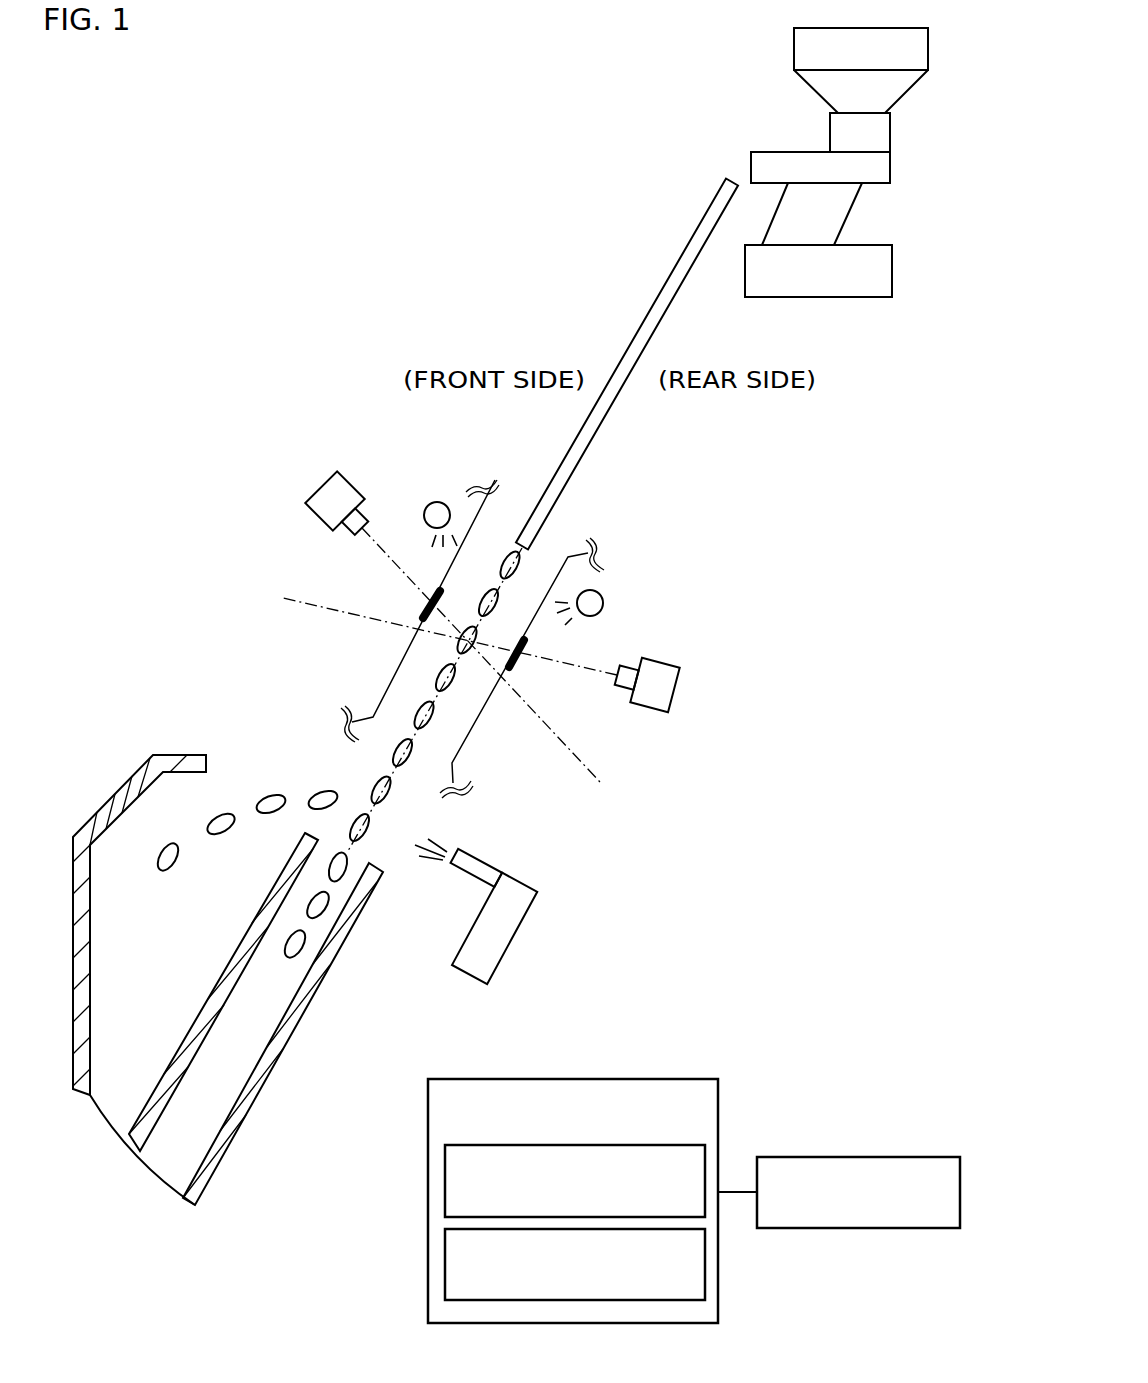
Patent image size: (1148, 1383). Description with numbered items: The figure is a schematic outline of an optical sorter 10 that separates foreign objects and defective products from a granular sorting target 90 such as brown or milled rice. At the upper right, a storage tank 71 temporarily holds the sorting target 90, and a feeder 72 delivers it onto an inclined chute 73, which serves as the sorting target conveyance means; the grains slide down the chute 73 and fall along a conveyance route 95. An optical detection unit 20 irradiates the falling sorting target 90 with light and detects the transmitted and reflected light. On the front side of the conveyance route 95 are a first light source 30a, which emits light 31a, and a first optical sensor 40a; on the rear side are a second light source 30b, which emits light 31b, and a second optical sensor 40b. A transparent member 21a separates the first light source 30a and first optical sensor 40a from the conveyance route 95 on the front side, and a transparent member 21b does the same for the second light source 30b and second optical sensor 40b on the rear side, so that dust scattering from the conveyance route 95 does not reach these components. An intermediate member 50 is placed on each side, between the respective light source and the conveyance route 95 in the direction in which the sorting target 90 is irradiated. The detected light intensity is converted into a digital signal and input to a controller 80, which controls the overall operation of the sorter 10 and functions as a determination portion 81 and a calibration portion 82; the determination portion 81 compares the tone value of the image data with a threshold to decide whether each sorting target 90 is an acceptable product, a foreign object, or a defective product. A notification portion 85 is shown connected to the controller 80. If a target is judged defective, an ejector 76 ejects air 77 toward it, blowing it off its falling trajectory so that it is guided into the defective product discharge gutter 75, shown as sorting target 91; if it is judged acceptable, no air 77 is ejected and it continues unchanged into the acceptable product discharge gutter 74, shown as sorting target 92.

The optical sorter 10 is at (196, 134).
The optical detection unit 20 is at (198, 449).
The transparent member 21a is at (412, 655).
The transparent member 21b is at (484, 683).
The first light source 30a is at (437, 502).
The second light source 30b is at (600, 592).
The light 31a is at (427, 547).
The light 31b is at (567, 623).
The first optical sensor 40a is at (322, 485).
The second optical sensor 40b is at (680, 688).
The intermediate member 50 is at (422, 612).
The storage tank 71 is at (812, 50).
The feeder 72 is at (778, 160).
The chute 73 is at (650, 325).
The acceptable product discharge gutter 74 is at (254, 1045).
The defective product discharge gutter 75 is at (164, 988).
The ejector 76 is at (527, 915).
The air 77 is at (428, 862).
The controller 80 is at (653, 1079).
The determination portion 81 is at (445, 1177).
The calibration portion 82 is at (445, 1259).
The notification portion 85 is at (860, 1157).
The sorting target 90 is at (407, 760).
The sorting target 91 is at (160, 848).
The sorting target 92 is at (306, 950).
The conveyance route 95 is at (390, 772).